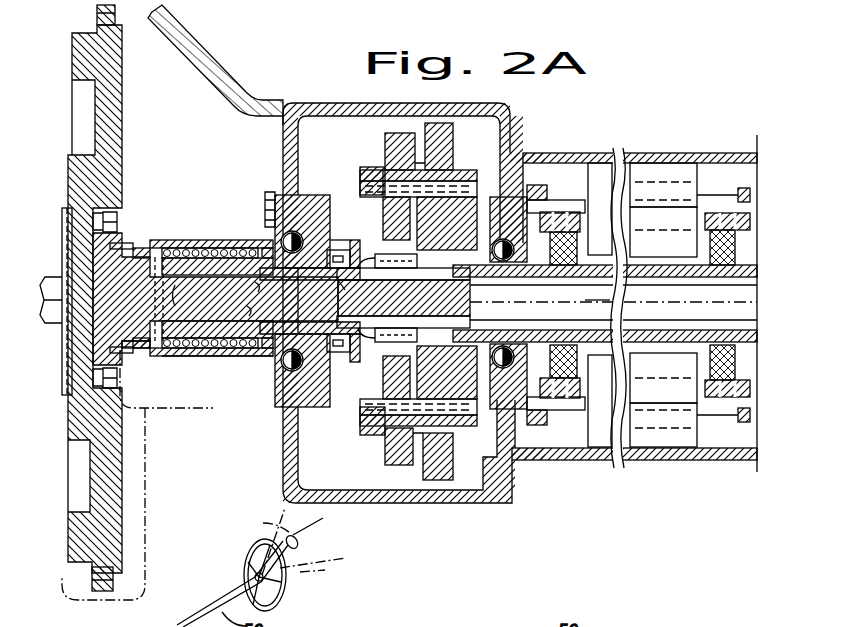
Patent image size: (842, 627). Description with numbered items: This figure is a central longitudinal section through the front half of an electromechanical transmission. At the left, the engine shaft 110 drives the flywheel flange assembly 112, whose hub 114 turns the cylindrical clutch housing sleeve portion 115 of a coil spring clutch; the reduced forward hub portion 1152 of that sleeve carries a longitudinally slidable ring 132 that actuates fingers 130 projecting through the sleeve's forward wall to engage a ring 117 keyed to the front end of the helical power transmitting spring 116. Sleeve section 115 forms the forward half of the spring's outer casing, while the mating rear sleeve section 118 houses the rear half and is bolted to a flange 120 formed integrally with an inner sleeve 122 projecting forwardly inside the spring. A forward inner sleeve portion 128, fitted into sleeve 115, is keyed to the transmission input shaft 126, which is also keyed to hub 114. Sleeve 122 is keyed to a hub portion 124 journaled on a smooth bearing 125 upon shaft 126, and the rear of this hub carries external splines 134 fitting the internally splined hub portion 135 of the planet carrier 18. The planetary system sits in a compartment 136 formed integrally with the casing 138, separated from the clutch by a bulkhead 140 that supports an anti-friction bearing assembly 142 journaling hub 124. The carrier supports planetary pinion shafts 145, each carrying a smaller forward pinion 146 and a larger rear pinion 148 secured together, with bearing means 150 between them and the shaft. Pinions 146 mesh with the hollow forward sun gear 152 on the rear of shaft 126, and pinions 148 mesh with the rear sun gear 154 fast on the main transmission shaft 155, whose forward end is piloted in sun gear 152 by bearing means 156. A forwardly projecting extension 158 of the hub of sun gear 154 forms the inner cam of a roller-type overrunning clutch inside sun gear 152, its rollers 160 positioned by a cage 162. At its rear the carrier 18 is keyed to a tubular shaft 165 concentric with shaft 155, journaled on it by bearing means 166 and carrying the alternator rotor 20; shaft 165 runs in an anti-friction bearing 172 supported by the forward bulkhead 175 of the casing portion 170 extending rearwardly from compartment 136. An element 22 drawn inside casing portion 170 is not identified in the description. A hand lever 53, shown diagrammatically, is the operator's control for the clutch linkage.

The flywheel flange assembly 112 is at (90, 382).
The reduced forward hub portion 1152 is at (90, 253).
The engine shaft 110 is at (50, 280).
The hub 114 is at (148, 278).
The forward inner sleeve portion 128 is at (191, 295).
The inner sleeve 122 is at (243, 289).
The smooth bearing 125 is at (235, 311).
The rear spring sleeve section 118 is at (228, 240).
The helical power transmitting spring 116 is at (205, 250).
The clutch housing sleeve portion 115 is at (175, 242).
The longitudinally slidable fingers 130 is at (135, 357).
The ring 117 is at (190, 362).
The longitudinally slidable ring 132 is at (123, 358).
The casing 138 is at (195, 50).
The compartment 136 is at (350, 103).
The bulkhead 140 is at (283, 121).
The flange 120 is at (265, 195).
The hub portion 124 is at (313, 268).
The transmission input shaft 126 is at (305, 292).
The anti-friction bearing assembly 142 is at (338, 188).
The forward sun gear 152 is at (362, 372).
The external splines 134 is at (300, 215).
The internally splined hub portion 135 is at (355, 207).
The planetary pinion shafts 145 is at (362, 172).
The planet carrier 18 is at (384, 172).
The forward planet pinion 146 is at (400, 133).
The rear planet pinion 148 is at (450, 133).
The bearing means 150 is at (406, 180).
The rollers 160 is at (405, 270).
The cage 162 is at (405, 268).
The forwardly projecting extension 158 is at (405, 312).
The bearing means 156 is at (372, 305).
The bearing means 166 is at (472, 290).
The anti-friction bearing 172 is at (510, 252).
The forward bulkhead 175 is at (510, 178).
The rear sun gear 154 is at (525, 310).
The main transmission shaft 155 is at (590, 312).
The casing portion 170 is at (592, 127).
The tubular shaft 165 is at (745, 278).
The motor stator 22 is at (667, 170).
The alternator rotor 20 is at (670, 243).
The hand lever 53 is at (267, 557).